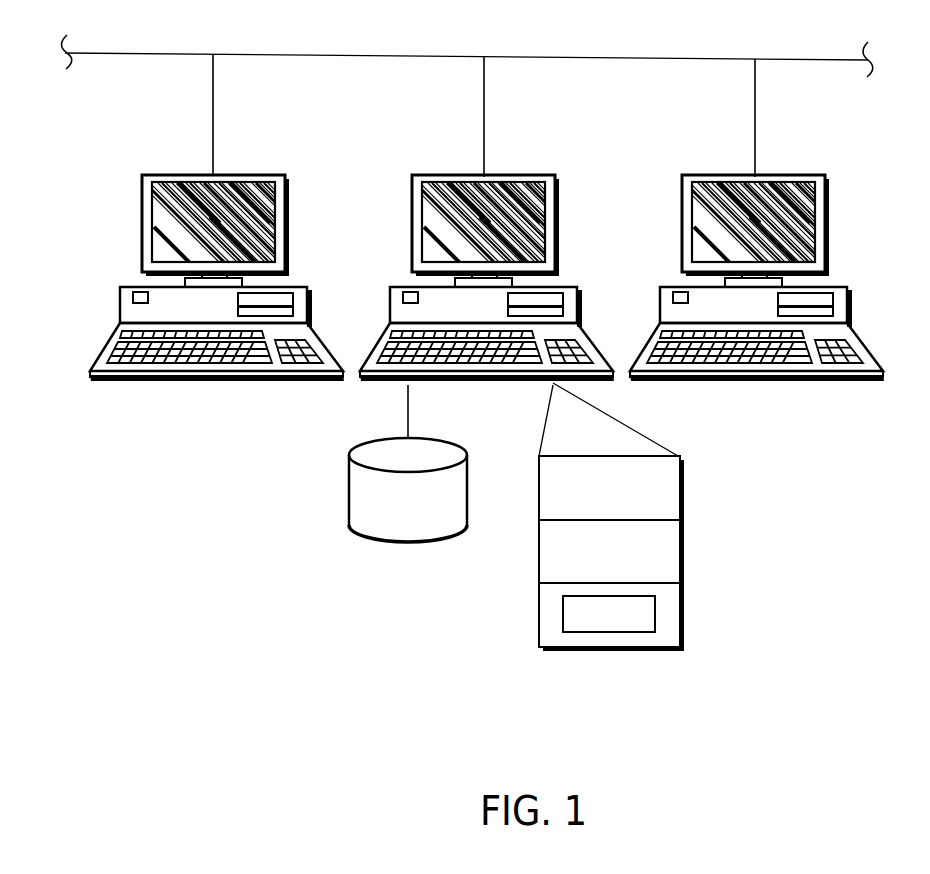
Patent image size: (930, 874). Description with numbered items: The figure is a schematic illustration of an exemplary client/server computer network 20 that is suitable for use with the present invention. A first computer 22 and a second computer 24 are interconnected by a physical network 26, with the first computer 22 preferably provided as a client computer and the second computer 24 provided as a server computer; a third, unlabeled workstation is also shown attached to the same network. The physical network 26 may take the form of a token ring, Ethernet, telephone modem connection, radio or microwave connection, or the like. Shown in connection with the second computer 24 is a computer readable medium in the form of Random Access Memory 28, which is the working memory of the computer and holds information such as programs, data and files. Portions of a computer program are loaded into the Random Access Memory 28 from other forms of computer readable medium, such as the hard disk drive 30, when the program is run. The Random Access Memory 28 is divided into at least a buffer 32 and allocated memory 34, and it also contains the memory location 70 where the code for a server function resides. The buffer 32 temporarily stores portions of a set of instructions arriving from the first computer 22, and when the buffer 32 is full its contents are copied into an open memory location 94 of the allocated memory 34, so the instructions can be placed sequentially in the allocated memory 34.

The client/server computer network 20 is at (101, 223).
The first computer 22 is at (308, 287).
The second computer 24 is at (576, 287).
The physical network 26 is at (590, 57).
The Random Access Memory 28 is at (482, 607).
The hard disk drive 30 is at (348, 486).
The buffer 32 is at (663, 493).
The allocated memory 34 is at (683, 591).
The memory location 70 is at (663, 548).
The open memory location 94 is at (655, 618).